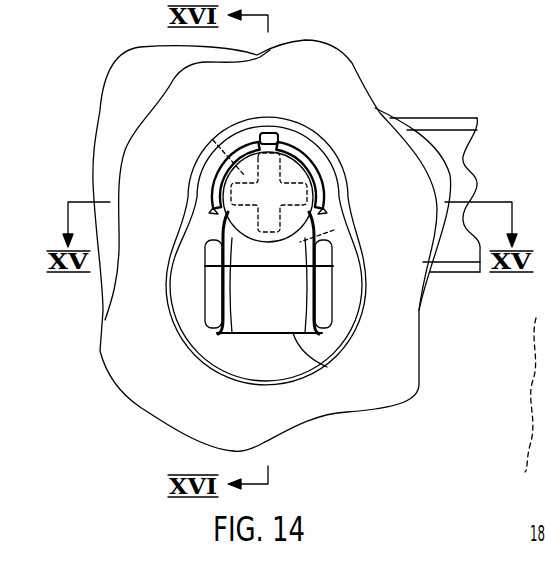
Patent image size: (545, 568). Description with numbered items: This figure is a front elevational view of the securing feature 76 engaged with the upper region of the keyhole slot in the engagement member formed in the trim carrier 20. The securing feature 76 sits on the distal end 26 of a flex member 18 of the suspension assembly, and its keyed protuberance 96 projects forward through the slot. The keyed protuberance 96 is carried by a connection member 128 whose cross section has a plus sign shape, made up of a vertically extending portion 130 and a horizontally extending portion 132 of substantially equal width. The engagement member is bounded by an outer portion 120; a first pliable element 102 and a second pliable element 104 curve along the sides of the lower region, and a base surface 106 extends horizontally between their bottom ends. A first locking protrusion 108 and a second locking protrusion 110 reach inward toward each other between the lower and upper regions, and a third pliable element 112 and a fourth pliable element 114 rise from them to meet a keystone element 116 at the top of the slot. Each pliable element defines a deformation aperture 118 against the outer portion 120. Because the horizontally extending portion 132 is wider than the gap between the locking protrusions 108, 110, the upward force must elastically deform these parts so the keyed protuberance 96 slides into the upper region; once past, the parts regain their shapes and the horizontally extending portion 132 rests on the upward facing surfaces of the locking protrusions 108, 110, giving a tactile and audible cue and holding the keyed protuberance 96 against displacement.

The flex member 18 is at (457, 248).
The trim carrier 20 is at (222, 421).
The distal end 26 is at (123, 128).
The securing feature 76 is at (258, 276).
The keyed protuberance 96 is at (233, 130).
The first pliable element 102 is at (327, 308).
The second pliable element 104 is at (217, 307).
The base surface 106 is at (323, 372).
The first locking protrusion 108 is at (312, 193).
The second locking protrusion 110 is at (225, 192).
The third pliable element 112 is at (326, 169).
The fourth pliable element 114 is at (213, 196).
The keystone element 116 is at (265, 131).
The deformation aperture 118 is at (213, 175).
The outer portion 120 is at (344, 250).
The connection member 128 is at (334, 230).
The vertically extending portion 130 is at (309, 143).
The horizontally extending portion 132 is at (213, 140).